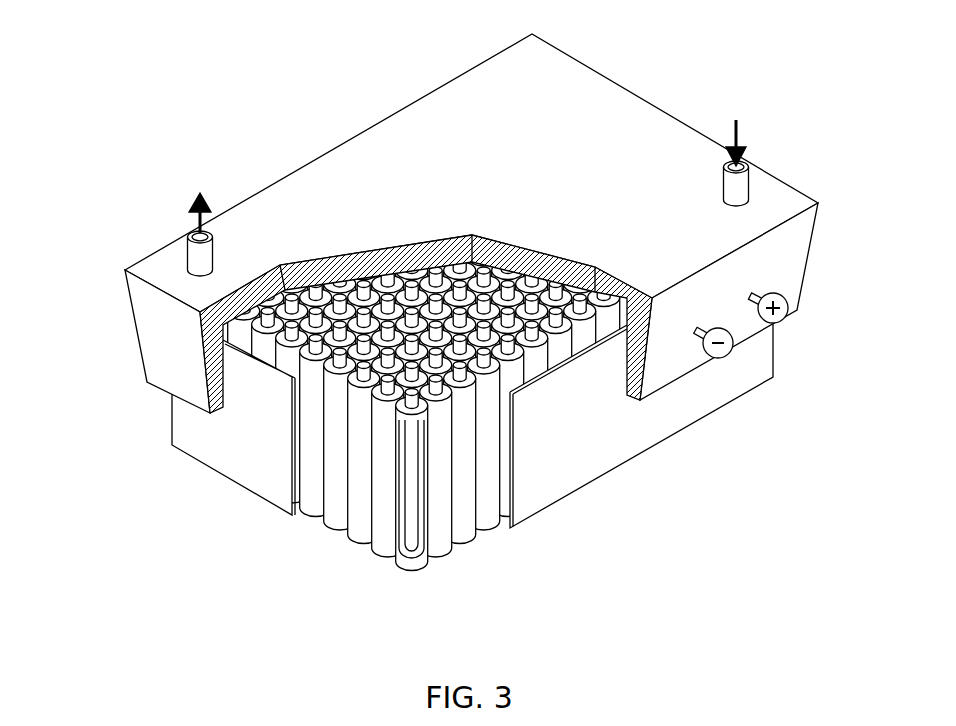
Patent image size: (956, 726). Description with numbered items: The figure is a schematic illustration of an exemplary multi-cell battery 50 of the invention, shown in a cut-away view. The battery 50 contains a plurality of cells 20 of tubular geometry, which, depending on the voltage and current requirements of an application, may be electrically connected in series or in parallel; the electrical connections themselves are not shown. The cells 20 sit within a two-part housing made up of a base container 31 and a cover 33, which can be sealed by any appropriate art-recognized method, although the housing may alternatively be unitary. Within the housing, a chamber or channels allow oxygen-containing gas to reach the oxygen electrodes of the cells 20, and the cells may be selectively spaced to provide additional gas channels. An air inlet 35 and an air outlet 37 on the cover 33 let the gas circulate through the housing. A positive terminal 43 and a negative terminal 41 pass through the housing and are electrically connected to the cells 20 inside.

The cell 20 is at (333, 518).
The base container 31 is at (203, 457).
The cover 33 is at (158, 347).
The air inlet 35 is at (737, 185).
The air outlet 37 is at (200, 257).
The negative terminal 41 is at (720, 357).
The positive terminal 43 is at (785, 318).
The battery 50 is at (425, 334).